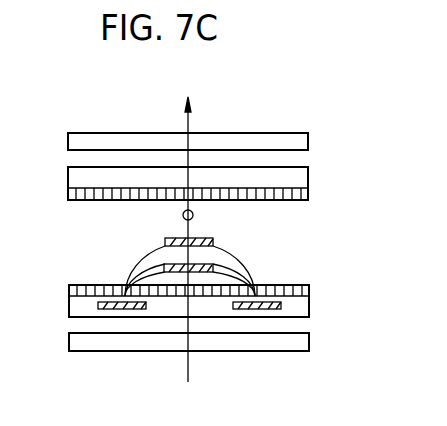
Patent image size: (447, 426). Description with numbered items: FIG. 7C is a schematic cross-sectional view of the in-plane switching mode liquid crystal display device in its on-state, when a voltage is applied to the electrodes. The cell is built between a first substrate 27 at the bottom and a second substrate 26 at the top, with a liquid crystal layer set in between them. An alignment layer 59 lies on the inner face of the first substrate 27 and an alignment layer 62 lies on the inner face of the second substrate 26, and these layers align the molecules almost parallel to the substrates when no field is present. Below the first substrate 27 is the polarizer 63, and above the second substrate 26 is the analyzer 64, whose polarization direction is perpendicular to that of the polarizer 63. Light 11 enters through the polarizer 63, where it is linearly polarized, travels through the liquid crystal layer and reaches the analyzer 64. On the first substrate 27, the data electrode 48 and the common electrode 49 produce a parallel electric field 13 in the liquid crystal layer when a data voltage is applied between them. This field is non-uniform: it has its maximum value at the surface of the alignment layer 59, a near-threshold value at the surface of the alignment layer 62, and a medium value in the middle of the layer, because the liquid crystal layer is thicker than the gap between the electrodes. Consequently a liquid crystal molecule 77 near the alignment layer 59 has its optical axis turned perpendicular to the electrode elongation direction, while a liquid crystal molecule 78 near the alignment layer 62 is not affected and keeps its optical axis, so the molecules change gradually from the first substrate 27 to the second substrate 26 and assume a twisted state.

The light 11 is at (190, 370).
The parallel electric field 13 is at (236, 254).
The second substrate 26 is at (308, 181).
The first substrate 27 is at (309, 294).
The data electrode 48 is at (99, 303).
The common electrode 49 is at (280, 302).
The alignment layer 59 is at (69, 290).
The alignment layer 62 is at (290, 199).
The polarizer 63 is at (309, 341).
The analyzer 64 is at (308, 141).
The liquid crystal molecule 77 is at (153, 263).
The liquid crystal molecule 78 is at (193, 215).